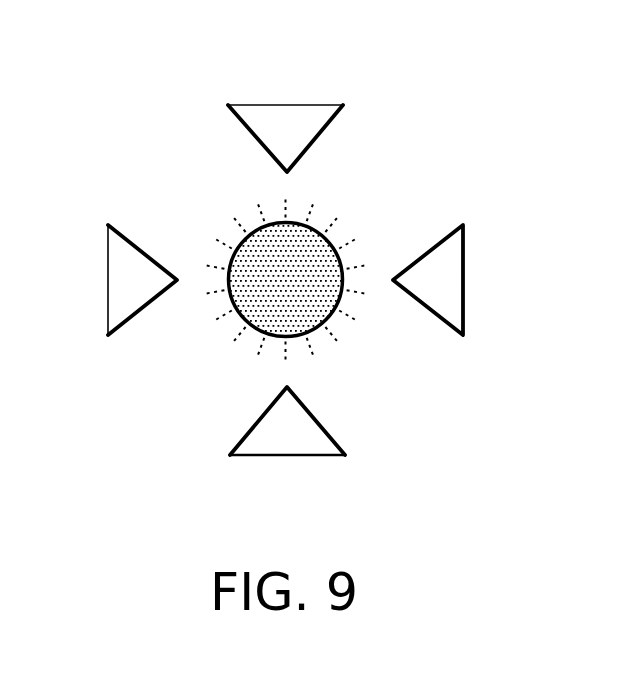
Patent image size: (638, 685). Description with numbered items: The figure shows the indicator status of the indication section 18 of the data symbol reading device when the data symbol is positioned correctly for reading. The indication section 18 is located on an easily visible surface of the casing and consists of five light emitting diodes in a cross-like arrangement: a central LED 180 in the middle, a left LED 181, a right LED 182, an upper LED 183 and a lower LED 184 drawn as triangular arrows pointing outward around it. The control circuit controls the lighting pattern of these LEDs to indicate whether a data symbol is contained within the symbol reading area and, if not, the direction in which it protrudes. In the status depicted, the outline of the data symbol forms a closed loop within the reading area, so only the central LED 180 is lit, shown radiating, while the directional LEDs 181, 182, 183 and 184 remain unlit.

The indication section 18 is at (294, 277).
The central LED 180 is at (277, 315).
The left LED 181 is at (127, 277).
The right LED 182 is at (465, 282).
The upper LED 183 is at (292, 118).
The lower LED 184 is at (282, 445).